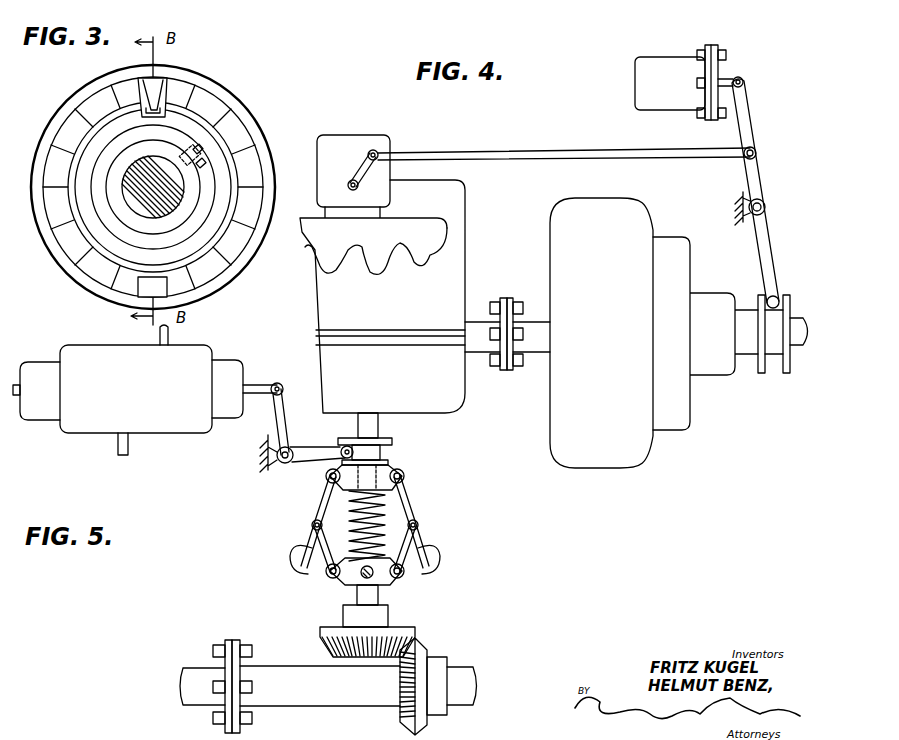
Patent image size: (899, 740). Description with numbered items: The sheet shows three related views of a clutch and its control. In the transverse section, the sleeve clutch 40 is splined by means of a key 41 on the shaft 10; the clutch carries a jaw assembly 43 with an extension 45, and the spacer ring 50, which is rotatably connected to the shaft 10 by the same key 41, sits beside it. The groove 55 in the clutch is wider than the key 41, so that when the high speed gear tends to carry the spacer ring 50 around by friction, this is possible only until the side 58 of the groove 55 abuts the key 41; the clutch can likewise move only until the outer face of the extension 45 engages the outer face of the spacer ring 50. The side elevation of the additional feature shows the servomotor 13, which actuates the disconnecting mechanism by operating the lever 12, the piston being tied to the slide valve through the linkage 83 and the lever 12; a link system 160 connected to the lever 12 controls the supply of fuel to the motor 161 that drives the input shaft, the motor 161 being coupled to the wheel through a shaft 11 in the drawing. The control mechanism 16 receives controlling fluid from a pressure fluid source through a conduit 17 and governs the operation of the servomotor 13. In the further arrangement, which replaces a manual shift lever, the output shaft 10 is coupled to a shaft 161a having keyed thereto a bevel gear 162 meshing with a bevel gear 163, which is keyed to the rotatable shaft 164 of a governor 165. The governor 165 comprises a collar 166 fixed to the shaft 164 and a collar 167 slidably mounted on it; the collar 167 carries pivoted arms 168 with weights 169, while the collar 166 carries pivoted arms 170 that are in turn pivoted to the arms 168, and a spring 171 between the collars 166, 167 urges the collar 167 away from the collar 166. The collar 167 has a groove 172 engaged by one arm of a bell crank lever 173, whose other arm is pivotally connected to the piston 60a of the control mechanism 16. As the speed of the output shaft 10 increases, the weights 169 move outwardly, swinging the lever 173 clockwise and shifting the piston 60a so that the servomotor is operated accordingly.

In FIG. 3, the shaft 10 is at (182, 183).
In FIG. 5, the shaft 10 is at (200, 672).
In FIG. 4, the coupling shaft 11 is at (538, 322).
In FIG. 4, the lever 12 is at (749, 125).
In FIG. 4, the servomotor 13 is at (680, 91).
In FIG. 4, the control mechanism 16 is at (148, 396).
In FIG. 4, the conduit 17 is at (126, 449).
In FIG. 3, the sleeve clutch 40 is at (118, 76).
In FIG. 3, the key 41 is at (188, 150).
In FIG. 3, the jaw assembly 43 is at (200, 158).
In FIG. 3, the extension 45 is at (158, 96).
In FIG. 3, the spacer ring 50 is at (97, 136).
In FIG. 3, the groove 55 is at (207, 167).
In FIG. 3, the side of groove 58 is at (182, 141).
In FIG. 4, the piston 60a is at (237, 380).
In FIG. 4, the linkage 83 is at (739, 77).
In FIG. 4, the link system 160 is at (588, 148).
In FIG. 4, the motor 161 is at (458, 270).
In FIG. 5, the shaft 161a is at (300, 670).
In FIG. 5, the bevel gear 162 is at (421, 660).
In FIG. 5, the bevel gear 163 is at (404, 629).
In FIG. 4, the rotatable shaft 164 is at (376, 595).
In FIG. 4, the governor 165 is at (412, 489).
In FIG. 4, the collar 166 is at (350, 582).
In FIG. 4, the collar 167 is at (383, 470).
In FIG. 4, the arms 168 is at (323, 512).
In FIG. 4, the weights 169 is at (299, 553).
In FIG. 4, the arms 170 is at (376, 556).
In FIG. 4, the spring 171 is at (353, 531).
In FIG. 4, the groove 172 is at (384, 446).
In FIG. 4, the bell crank lever 173 is at (301, 430).